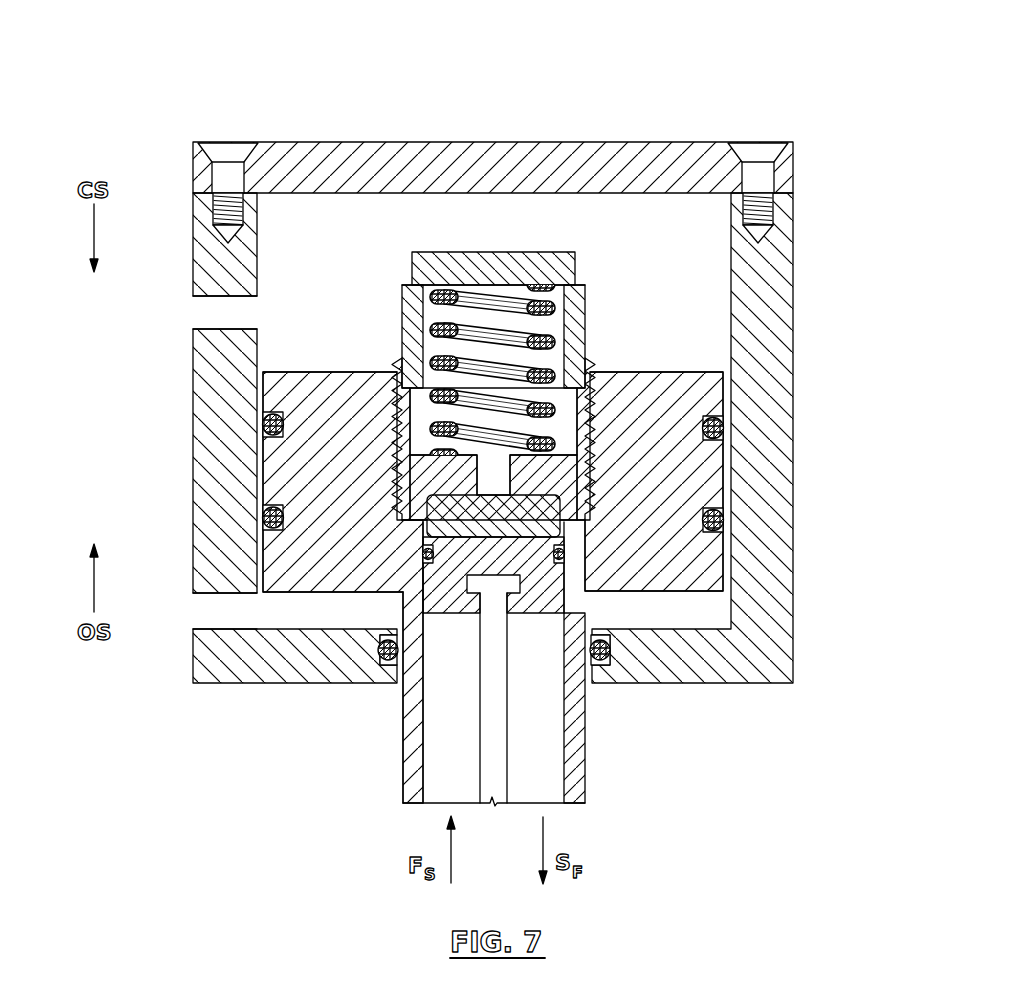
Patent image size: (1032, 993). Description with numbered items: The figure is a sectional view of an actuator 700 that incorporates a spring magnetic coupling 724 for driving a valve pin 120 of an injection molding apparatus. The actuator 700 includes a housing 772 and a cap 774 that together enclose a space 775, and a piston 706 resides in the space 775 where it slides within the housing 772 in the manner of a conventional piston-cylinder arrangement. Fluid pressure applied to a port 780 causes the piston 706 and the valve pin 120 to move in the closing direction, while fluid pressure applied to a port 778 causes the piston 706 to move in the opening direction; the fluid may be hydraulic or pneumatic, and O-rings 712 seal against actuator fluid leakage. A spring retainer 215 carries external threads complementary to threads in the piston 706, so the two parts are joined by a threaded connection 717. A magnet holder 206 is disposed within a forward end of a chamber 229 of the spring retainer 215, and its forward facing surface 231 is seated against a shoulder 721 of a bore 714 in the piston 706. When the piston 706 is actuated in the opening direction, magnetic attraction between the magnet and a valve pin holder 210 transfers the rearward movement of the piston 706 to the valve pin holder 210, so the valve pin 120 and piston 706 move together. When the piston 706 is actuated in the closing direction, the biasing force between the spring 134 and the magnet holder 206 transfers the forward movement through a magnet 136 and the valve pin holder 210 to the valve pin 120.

The actuator 700 is at (393, 120).
The housing 772 is at (772, 304).
The cap 774 is at (786, 174).
The port 780 is at (201, 309).
The port 778 is at (197, 602).
The space 775 is at (342, 258).
The magnet holder 206 is at (420, 476).
The piston 706 is at (707, 471).
The O-rings 712 is at (262, 417).
The magnet 136 is at (412, 522).
The threaded connection 717 is at (595, 432).
The spring retainer 215 is at (474, 265).
The spring magnetic coupling 724 is at (584, 247).
The chamber 229 is at (565, 407).
The spring 134 is at (560, 312).
The shoulder 721 is at (577, 522).
The valve pin holder 210 is at (450, 612).
The forward facing surface 231 is at (576, 521).
The valve pin 120 is at (502, 720).
The bore 714 is at (424, 756).